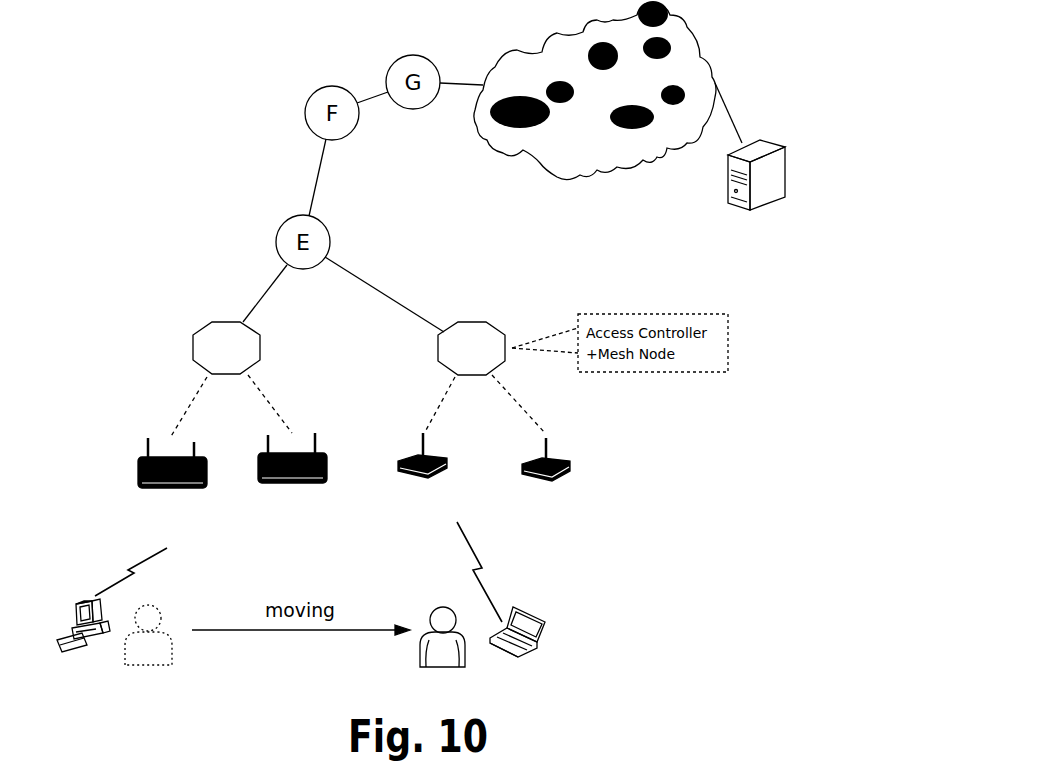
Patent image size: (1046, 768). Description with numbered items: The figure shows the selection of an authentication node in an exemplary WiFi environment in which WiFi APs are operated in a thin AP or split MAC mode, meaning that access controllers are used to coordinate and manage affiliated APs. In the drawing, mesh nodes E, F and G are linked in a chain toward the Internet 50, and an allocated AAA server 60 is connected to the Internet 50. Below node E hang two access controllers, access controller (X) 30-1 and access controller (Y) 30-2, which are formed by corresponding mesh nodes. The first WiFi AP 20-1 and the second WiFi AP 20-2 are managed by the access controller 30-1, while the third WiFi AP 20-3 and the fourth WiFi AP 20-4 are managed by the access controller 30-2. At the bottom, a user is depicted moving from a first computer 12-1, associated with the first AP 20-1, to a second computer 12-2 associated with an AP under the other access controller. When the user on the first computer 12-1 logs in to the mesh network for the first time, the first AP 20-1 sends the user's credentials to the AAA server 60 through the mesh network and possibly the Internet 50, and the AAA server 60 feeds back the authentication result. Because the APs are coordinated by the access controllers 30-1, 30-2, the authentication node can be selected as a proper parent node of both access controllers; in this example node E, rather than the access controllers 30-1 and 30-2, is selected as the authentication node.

The Internet 50 is at (623, 90).
The AAA server 60 is at (775, 160).
The access controller (X) 30-1 is at (272, 334).
The access controller (Y) 30-2 is at (501, 329).
The WiFi AP 1 20-1 is at (132, 462).
The WiFi AP 2 20-2 is at (261, 463).
The WiFi AP 3 20-3 is at (451, 460).
The WiFi AP 4 20-4 is at (582, 463).
The first computer 12-1 is at (122, 613).
The second computer 12-2 is at (542, 601).